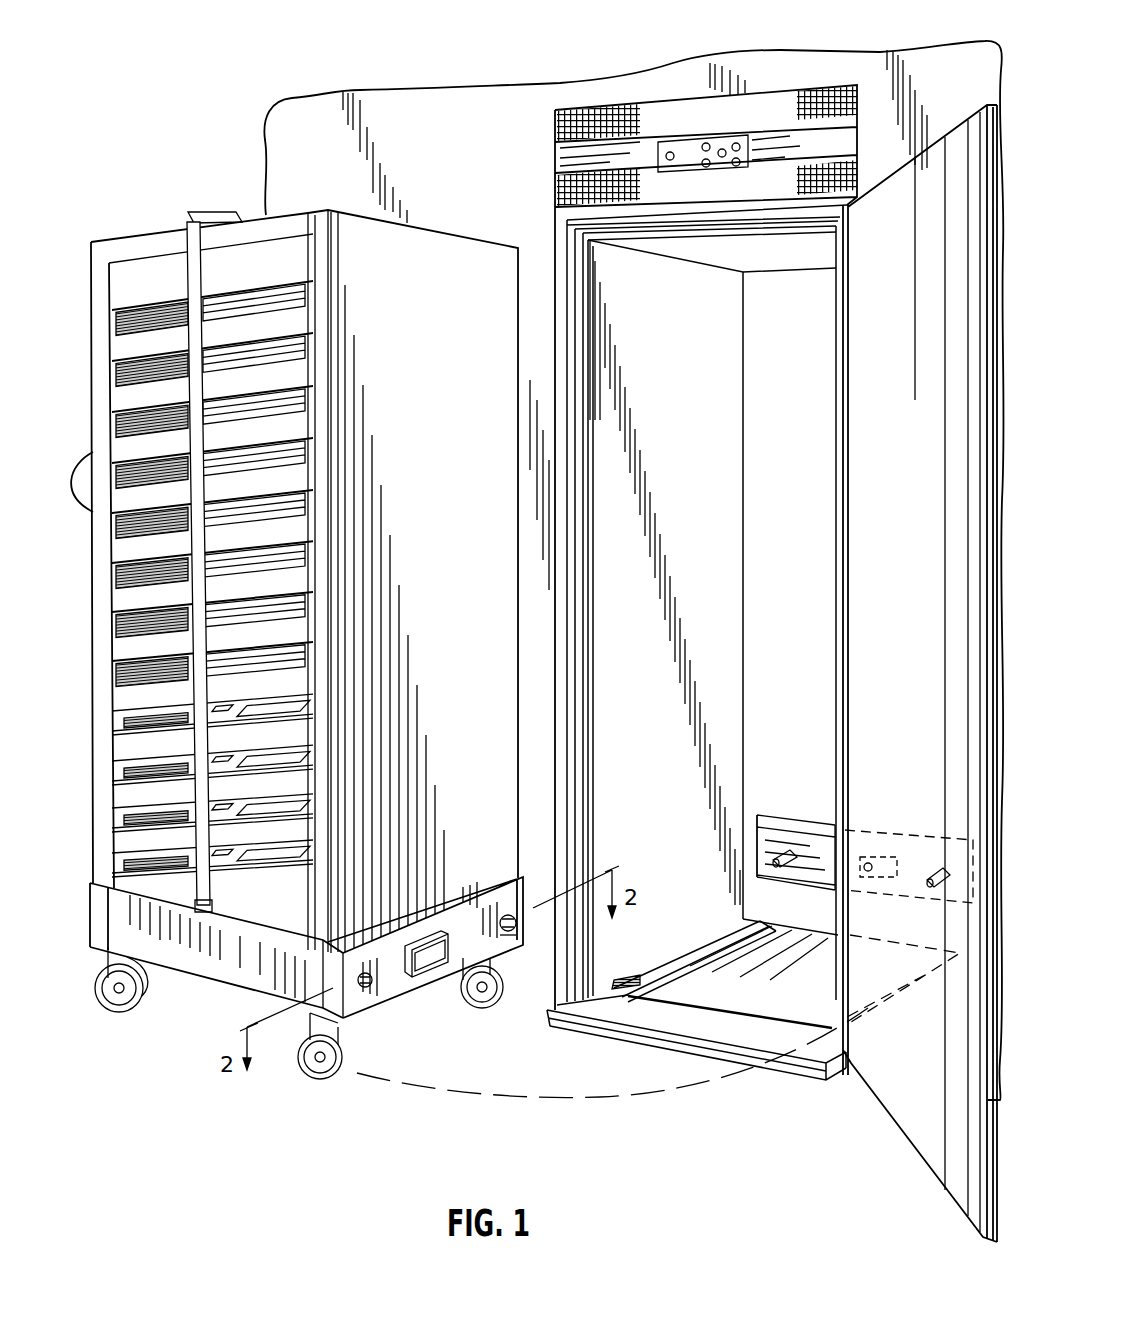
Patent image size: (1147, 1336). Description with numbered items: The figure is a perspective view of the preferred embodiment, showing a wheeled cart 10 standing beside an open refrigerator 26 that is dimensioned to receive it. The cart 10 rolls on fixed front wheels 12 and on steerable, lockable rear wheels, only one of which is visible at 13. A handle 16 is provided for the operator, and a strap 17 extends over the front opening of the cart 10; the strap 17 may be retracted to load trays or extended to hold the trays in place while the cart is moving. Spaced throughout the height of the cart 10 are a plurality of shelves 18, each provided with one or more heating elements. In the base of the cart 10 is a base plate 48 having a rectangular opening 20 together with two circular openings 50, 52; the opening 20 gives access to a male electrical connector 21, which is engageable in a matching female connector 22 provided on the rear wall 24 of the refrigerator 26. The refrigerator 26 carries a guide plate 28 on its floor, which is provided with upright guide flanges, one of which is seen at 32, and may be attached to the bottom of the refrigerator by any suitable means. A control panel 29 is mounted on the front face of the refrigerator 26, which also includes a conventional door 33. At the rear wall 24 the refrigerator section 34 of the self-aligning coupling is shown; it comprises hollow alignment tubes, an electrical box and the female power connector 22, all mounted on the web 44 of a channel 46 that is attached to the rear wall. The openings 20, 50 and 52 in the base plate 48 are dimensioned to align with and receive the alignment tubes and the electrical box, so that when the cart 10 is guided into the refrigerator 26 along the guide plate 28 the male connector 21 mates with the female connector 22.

The cart 10 is at (226, 198).
The fixed front wheels 12 is at (334, 1085).
The steerable and lockable rear wheel 13 is at (121, 1012).
The handle 16 is at (88, 512).
The strap 17 is at (190, 262).
The shelves 18 is at (324, 690).
The opening 20 is at (456, 928).
The male electrical connector 21 is at (445, 934).
The female connector 22 is at (870, 855).
The rear wall 24 is at (800, 696).
The refrigerator 26 is at (538, 206).
The guide plate 28 is at (784, 1005).
The control panel 29 is at (698, 150).
The upright guide flange 32 is at (700, 947).
The door 33 is at (935, 175).
The refrigerator section 34 is at (803, 806).
The web 44 is at (773, 856).
The channel 46 is at (762, 815).
The base plate 48 is at (505, 943).
The circular opening 50 is at (516, 920).
The circular opening 52 is at (370, 988).